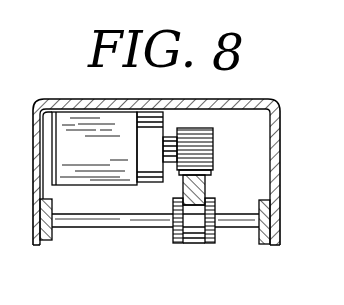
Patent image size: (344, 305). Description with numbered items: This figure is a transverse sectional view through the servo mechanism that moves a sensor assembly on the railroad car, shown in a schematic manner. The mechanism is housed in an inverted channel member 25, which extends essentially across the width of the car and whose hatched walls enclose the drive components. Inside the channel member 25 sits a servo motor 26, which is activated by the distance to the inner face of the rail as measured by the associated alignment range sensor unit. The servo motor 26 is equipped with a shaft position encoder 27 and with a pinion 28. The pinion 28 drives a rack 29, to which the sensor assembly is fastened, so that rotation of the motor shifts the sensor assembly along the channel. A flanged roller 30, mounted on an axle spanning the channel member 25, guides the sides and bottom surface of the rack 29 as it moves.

The inverted channel member 25 is at (230, 103).
The servo motor 26 is at (94, 148).
The shaft position encoder 27 is at (150, 128).
The pinion 28 is at (213, 139).
The rack 29 is at (207, 190).
The flanged roller 30 is at (210, 245).